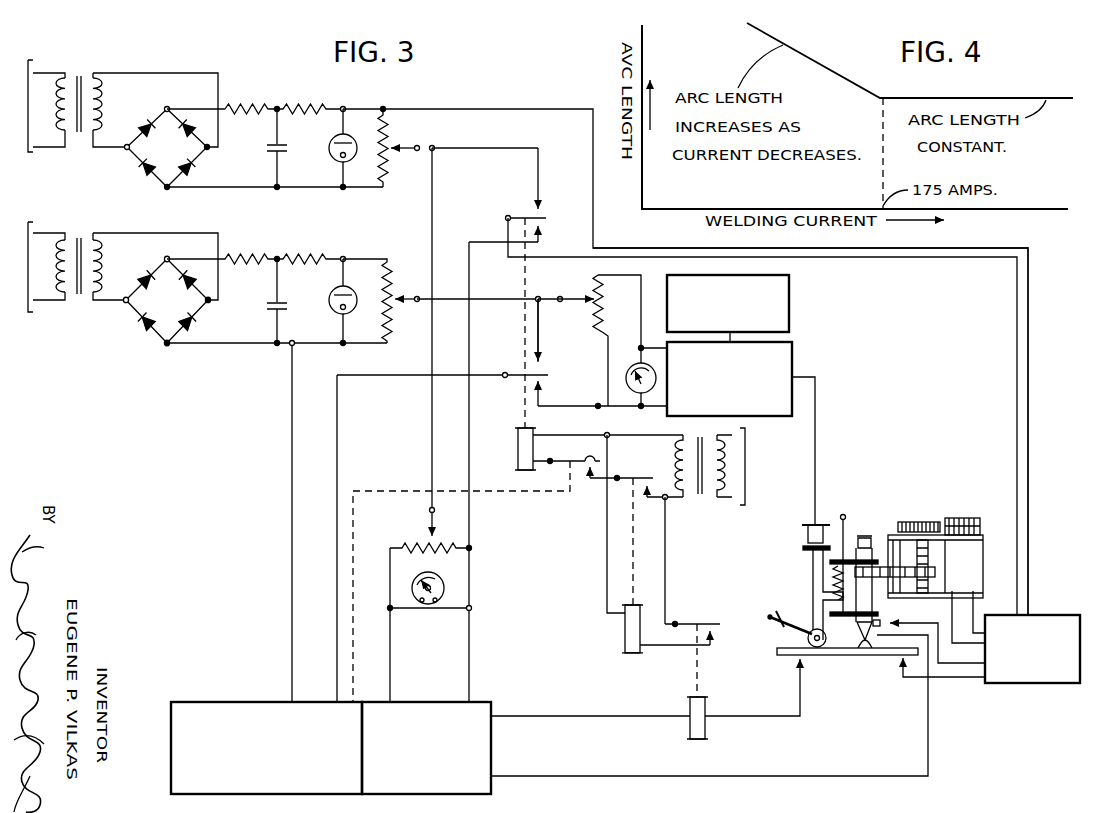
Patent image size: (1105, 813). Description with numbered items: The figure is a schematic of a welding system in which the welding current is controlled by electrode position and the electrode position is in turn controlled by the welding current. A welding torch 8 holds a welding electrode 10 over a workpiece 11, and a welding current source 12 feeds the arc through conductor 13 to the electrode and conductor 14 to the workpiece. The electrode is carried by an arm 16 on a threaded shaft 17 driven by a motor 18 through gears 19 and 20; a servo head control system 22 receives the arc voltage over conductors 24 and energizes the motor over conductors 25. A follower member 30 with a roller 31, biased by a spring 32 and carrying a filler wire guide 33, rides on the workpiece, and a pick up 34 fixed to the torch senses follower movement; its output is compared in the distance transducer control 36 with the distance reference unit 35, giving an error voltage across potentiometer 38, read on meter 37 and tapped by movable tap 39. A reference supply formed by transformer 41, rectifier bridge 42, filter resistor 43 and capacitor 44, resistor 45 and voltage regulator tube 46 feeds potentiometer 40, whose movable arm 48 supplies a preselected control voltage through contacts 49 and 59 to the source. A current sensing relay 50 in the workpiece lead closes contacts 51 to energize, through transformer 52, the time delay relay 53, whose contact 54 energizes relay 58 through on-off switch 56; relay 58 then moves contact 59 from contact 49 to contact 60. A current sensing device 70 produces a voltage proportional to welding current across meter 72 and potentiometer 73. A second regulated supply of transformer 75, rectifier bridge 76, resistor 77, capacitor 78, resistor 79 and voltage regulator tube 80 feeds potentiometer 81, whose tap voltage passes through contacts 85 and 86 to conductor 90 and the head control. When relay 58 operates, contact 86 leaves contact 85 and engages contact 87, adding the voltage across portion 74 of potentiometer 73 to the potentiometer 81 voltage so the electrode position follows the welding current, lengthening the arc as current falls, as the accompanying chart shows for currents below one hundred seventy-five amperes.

The welding torch 8 is at (878, 612).
The welding electrode 10 is at (860, 646).
The workpiece 11 is at (878, 656).
The welding current source 12 is at (248, 714).
The conductor 13 is at (800, 776).
The conductor 14 is at (766, 716).
The arm 16 is at (877, 546).
The threaded shaft 17 is at (930, 589).
The motor 18 is at (975, 546).
The gear 19 is at (962, 520).
The gear 20 is at (910, 522).
The servo head control system 22 is at (1032, 618).
The conductors 24 is at (970, 678).
The conductors 25 is at (975, 632).
The follower member 30 is at (812, 600).
The roller 31 is at (815, 648).
The spring 32 is at (832, 580).
The filler wire guide 33 is at (792, 630).
The pick up 34 is at (808, 535).
The distance reference unit 35 is at (783, 300).
The distance transducer control 36 is at (788, 364).
The meter 37 is at (630, 372).
The potentiometer 38 is at (589, 313).
The movable tap 39 is at (586, 298).
The potentiometer 40 is at (393, 272).
The transformer 41 is at (80, 236).
The rectifier bridge 42 is at (164, 286).
The resistor 43 is at (254, 254).
The capacitor 44 is at (284, 310).
The resistor 45 is at (312, 254).
The voltage regulator tube 46 is at (330, 306).
The movable arm 48 is at (408, 303).
The contact 49 is at (535, 368).
The current sensing relay 50 is at (706, 714).
The contacts 51 is at (712, 624).
The transformer 52 is at (698, 500).
The time delay relay 53 is at (625, 641).
The contact 54 is at (643, 480).
The on-off switch 56 is at (579, 460).
The relay 58 is at (518, 447).
The contact 59 is at (548, 374).
The contact 60 is at (545, 386).
The current sensing device 70 is at (486, 713).
The meter 72 is at (428, 606).
The potentiometer 73 is at (422, 545).
The portion of potentiometer 74 is at (456, 546).
The transformer 75 is at (81, 72).
The rectifier bridge 76 is at (164, 134).
The resistor 77 is at (257, 86).
The capacitor 78 is at (273, 151).
The resistor 79 is at (312, 104).
The voltage regulator tube 80 is at (331, 154).
The potentiometer 81 is at (392, 135).
The contact 85 is at (543, 221).
The contact 86 is at (515, 215).
The contact 87 is at (543, 231).
The conductor 90 is at (855, 252).